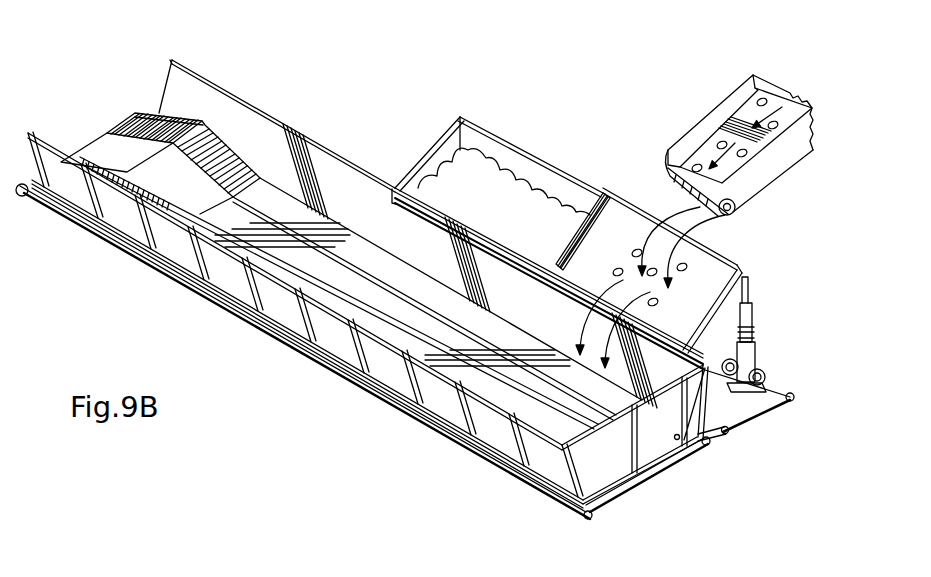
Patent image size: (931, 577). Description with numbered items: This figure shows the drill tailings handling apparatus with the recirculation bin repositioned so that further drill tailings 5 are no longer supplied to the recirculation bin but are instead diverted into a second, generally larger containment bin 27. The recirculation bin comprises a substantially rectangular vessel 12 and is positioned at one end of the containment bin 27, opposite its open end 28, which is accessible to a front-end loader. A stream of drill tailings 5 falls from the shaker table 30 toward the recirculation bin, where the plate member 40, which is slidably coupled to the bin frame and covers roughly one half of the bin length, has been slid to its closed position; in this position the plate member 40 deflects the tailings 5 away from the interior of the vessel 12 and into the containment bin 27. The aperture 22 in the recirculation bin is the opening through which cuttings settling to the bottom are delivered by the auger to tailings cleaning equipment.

The drill tailings 5 is at (469, 193).
The substantially rectangular vessel 12 is at (437, 138).
The aperture 22 is at (760, 378).
The containment bin 27 is at (333, 275).
The open end 28 is at (167, 45).
The shaker table 30 is at (768, 167).
The plate member 40 is at (632, 227).